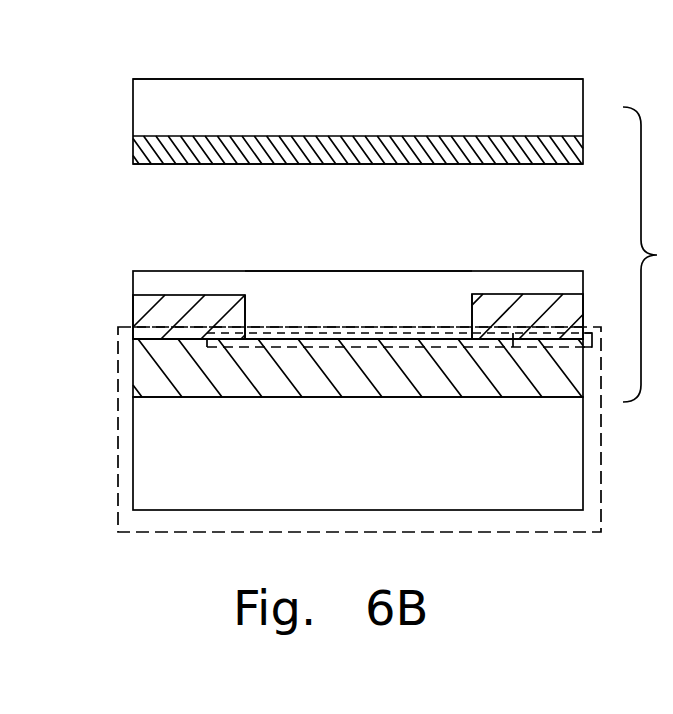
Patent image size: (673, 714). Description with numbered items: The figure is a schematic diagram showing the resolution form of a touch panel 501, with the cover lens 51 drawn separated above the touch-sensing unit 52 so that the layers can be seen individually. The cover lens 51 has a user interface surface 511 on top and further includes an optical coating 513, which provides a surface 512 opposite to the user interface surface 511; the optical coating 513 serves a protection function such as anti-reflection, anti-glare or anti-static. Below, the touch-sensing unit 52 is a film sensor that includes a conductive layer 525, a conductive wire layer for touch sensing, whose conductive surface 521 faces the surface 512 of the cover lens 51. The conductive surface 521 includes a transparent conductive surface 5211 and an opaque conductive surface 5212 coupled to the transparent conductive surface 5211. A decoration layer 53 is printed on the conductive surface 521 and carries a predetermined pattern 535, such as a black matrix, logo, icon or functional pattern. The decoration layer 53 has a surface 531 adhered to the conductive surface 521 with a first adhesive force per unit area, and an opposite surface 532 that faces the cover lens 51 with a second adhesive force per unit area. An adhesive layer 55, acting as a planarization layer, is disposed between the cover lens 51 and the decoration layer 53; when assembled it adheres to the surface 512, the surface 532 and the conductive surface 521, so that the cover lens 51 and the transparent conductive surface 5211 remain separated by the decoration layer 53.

The touch panel 501 is at (585, 52).
The cover lens 51 is at (168, 122).
The user interface surface 511 is at (290, 79).
The surface 512 is at (300, 163).
The optical coating 513 is at (157, 147).
The touch-sensing unit 52 is at (117, 486).
The conductive surface 521 is at (317, 338).
The transparent conductive surface 5211 is at (274, 328).
The opaque conductive surface 5212 is at (547, 333).
The conductive layer 525 is at (437, 380).
The decoration layer 53 is at (160, 313).
The surface 531 is at (152, 340).
The surface 532 is at (183, 295).
The predetermined pattern 535 is at (502, 282).
The adhesive layer 55 is at (443, 296).